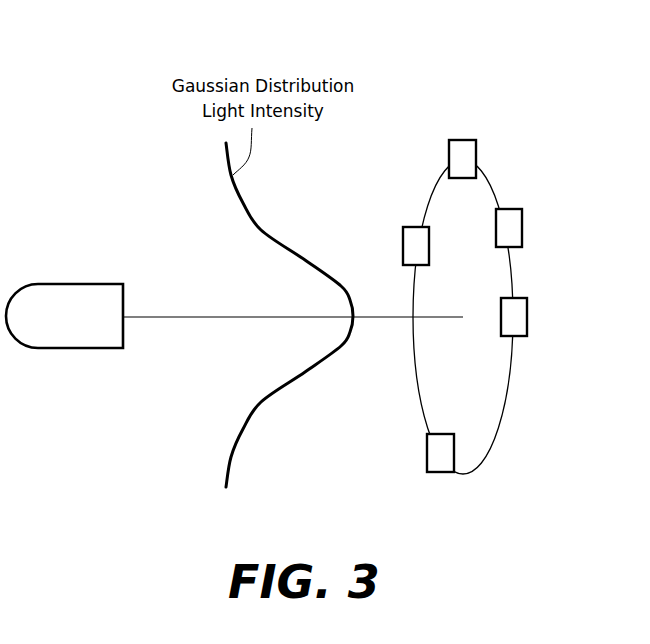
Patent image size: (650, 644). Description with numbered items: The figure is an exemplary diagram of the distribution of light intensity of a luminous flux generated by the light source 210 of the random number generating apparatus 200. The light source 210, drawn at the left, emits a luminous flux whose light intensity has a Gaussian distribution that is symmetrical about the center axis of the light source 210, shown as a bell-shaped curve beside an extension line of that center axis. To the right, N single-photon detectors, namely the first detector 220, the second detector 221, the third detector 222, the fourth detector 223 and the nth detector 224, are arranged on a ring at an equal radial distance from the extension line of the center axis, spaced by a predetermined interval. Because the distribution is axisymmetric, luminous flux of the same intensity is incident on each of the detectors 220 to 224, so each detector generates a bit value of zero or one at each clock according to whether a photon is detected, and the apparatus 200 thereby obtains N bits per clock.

The random number generating apparatus 200 is at (85, 57).
The light source 210 is at (100, 284).
The single-photon detector SPD#1 220 is at (452, 139).
The single-photon detector SPD#2 221 is at (520, 208).
The single-photon detector SPD#3 222 is at (518, 297).
The single-photon detector SPD#4 223 is at (450, 432).
The single-photon detector SPD#n 224 is at (405, 226).